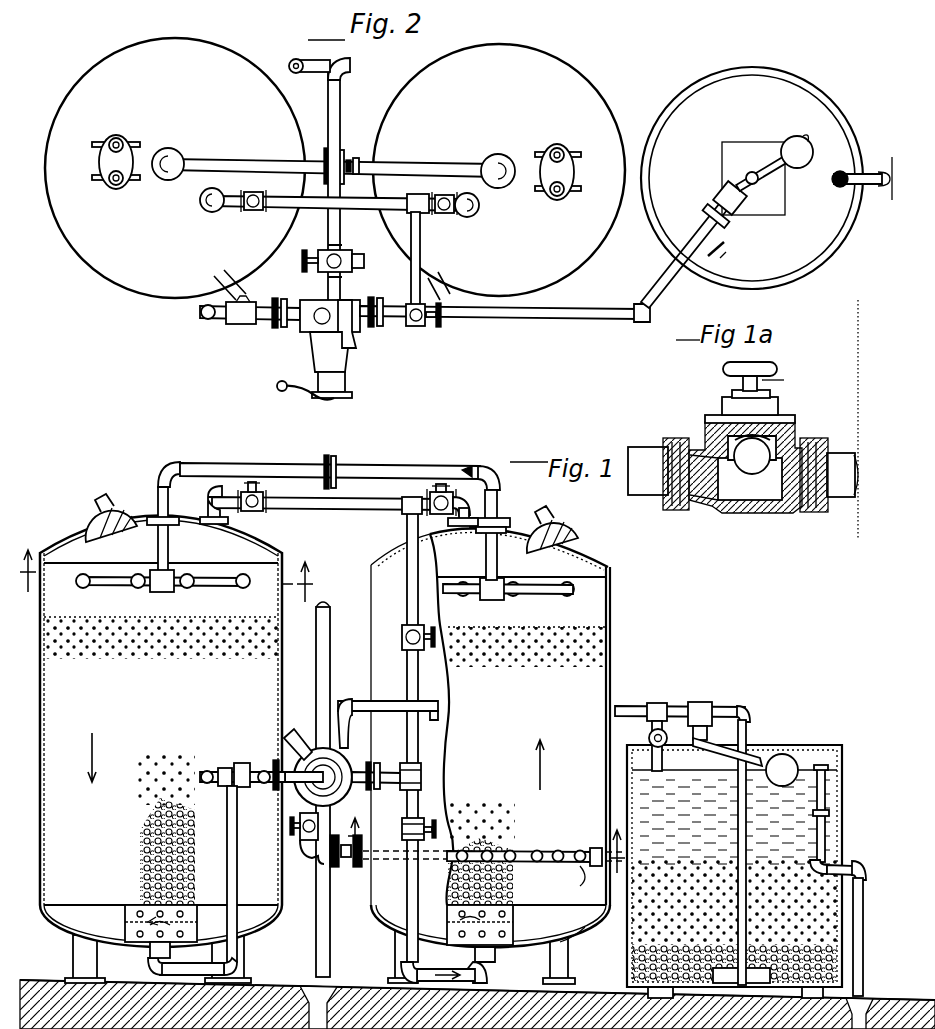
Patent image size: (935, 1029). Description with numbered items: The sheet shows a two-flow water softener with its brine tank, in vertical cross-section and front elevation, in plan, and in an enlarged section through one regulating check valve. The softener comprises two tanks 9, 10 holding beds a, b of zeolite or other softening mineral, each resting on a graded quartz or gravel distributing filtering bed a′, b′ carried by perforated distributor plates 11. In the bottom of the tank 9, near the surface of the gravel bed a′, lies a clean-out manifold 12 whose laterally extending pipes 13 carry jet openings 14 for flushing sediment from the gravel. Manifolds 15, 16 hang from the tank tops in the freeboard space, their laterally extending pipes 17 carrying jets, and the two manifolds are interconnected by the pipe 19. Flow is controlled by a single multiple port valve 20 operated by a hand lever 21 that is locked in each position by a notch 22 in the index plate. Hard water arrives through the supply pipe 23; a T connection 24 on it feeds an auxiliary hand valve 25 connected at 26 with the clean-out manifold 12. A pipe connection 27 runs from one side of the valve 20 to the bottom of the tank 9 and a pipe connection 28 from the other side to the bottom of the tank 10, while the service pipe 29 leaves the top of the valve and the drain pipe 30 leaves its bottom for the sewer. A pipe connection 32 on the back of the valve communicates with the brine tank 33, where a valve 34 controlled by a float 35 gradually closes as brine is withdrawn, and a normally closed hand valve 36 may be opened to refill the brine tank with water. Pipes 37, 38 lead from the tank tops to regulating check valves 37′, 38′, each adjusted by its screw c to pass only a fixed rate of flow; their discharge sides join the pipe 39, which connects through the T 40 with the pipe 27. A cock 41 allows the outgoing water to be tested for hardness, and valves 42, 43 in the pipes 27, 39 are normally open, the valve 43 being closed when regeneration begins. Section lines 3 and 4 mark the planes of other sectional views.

In FIG. 2, the tank 9 is at (499, 170).
In FIG. 1, the tank 9 is at (614, 664).
In FIG. 2, the tank 10 is at (175, 168).
In FIG. 1, the tank 10 is at (42, 662).
In FIG. 1, the perforated distributor plates 11 is at (582, 934).
In FIG. 1, the clean-out manifold 12 is at (530, 850).
In FIG. 1, the laterally extending pipes 13 is at (578, 850).
In FIG. 1, the jet openings 14 is at (568, 866).
In FIG. 1, the manifold 15 is at (548, 596).
In FIG. 1, the manifold 16 is at (214, 588).
In FIG. 1, the laterally extending pipes 17 is at (186, 590).
In FIG. 2, the interconnection 19 is at (236, 164).
In FIG. 1, the interconnection 19 is at (290, 470).
In FIG. 2, the multiple port valve 20 is at (302, 340).
In FIG. 1, the multiple port valve 20 is at (345, 757).
In FIG. 2, the hand lever 21 is at (300, 403).
In FIG. 1, the hand lever 21 is at (264, 770).
In FIG. 1, the notch 22 is at (302, 818).
In FIG. 2, the supply pipe 23 is at (300, 62).
In FIG. 1, the supply pipe 23 is at (304, 716).
In FIG. 2, the T connection 24 is at (360, 258).
In FIG. 2, the auxiliary hand valve 25 is at (324, 254).
In FIG. 1, the auxiliary hand valve 25 is at (306, 858).
In FIG. 2, the connection 26 is at (346, 150).
In FIG. 1, the connection 26 is at (344, 870).
In FIG. 2, the pipe connection 27 is at (410, 327).
In FIG. 1, the pipe connection 27 is at (376, 790).
In FIG. 1, the pipe connection 28 is at (240, 795).
In FIG. 2, the service pipe 29 is at (348, 336).
In FIG. 1, the service pipe 29 is at (332, 656).
In FIG. 1, the drain pipe 30 is at (330, 937).
In FIG. 2, the pipe connection 32 is at (463, 320).
In FIG. 1, the pipe connection 32 is at (382, 700).
In FIG. 2, the brine tank 33 is at (822, 96).
In FIG. 1, the brine tank 33 is at (815, 756).
In FIG. 2, the valve 34 is at (712, 204).
In FIG. 1, the valve 34 is at (706, 704).
In FIG. 2, the float 35 is at (802, 136).
In FIG. 1, the float 35 is at (784, 754).
In FIG. 2, the hand valve 36 is at (728, 254).
In FIG. 1, the hand valve 36 is at (648, 740).
In FIG. 1, the pipe 37 is at (500, 514).
In FIG. 2, the regulating check valve 37′ is at (461, 216).
In FIG. 1A, the regulating check valve 37′ is at (748, 514).
In FIG. 1, the regulating check valve 37′ is at (450, 488).
In FIG. 1, the pipe 38 is at (224, 512).
In FIG. 2, the regulating check valve 38′ is at (250, 212).
In FIG. 1, the regulating check valve 38′ is at (268, 506).
In FIG. 1, the pipe 39 is at (407, 592).
In FIG. 1, the T 40 is at (422, 770).
In FIG. 1, the cock 41 is at (226, 766).
In FIG. 1, the valve 42 is at (428, 822).
In FIG. 1, the valve 43 is at (426, 648).
In FIG. 1, the section line 3 is at (169, 565).
In FIG. 1, the section line 4 is at (486, 835).
In FIG. 1A, the screw c is at (782, 379).
In FIG. 1, the screw c is at (440, 484).
In FIG. 1, the bed a is at (500, 691).
In FIG. 1, the distributing filtering bed a′ is at (533, 887).
In FIG. 1, the bed b is at (146, 681).
In FIG. 1, the distributing filtering bed b′ is at (108, 879).